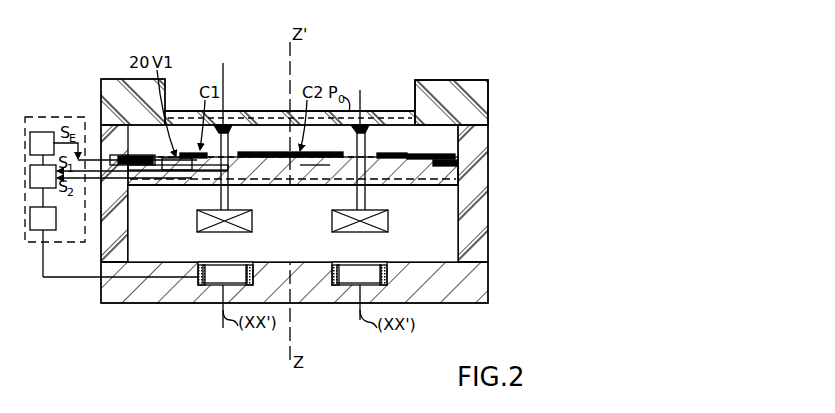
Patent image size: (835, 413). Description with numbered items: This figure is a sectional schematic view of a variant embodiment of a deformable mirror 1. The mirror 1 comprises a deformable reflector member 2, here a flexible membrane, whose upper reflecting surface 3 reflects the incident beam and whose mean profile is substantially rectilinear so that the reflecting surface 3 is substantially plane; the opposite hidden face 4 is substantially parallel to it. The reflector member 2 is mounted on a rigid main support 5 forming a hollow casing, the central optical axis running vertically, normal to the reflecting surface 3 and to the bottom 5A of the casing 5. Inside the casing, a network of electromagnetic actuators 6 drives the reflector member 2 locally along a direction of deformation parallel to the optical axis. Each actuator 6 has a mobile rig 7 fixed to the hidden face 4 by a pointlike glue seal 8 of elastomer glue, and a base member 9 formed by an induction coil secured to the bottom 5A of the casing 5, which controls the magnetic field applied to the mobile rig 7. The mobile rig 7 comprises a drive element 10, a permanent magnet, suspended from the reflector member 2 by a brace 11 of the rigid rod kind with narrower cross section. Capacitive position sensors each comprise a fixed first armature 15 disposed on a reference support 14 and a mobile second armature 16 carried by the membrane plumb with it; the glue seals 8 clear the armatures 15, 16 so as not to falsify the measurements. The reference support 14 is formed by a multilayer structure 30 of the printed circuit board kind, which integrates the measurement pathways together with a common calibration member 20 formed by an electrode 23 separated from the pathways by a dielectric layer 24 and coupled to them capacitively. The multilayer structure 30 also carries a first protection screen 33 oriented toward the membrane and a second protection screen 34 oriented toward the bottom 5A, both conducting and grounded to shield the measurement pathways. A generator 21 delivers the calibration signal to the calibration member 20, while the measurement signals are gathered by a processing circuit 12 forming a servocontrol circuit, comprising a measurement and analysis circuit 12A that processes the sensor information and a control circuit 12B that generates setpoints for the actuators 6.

The deformable mirror 1 is at (427, 48).
The reflector member 2 is at (384, 111).
The reflecting surface 3 is at (376, 110).
The hidden face 4 is at (422, 118).
The main support 5 is at (491, 206).
The bottom of the casing 5A is at (434, 259).
The actuator 6 is at (406, 231).
The mobile rig 7 is at (251, 215).
The glue seal 8 is at (228, 125).
The base member 9 is at (198, 290).
The drive element 10 is at (197, 223).
The brace 11 is at (220, 201).
The processing circuit 12 is at (47, 117).
The measurement and analysis circuit 12A is at (43, 186).
The control circuit 12B is at (43, 218).
The reference support 14 is at (434, 150).
The first armature 15 is at (188, 152).
The second armature 16 is at (281, 112).
The common calibration member 20 is at (141, 155).
The generator 21 is at (42, 148).
The electrode 23 is at (460, 162).
The dielectric layer 24 is at (118, 160).
The multilayer structure 30 is at (495, 157).
The first protection screen 33 is at (418, 155).
The second protection screen 34 is at (317, 196).